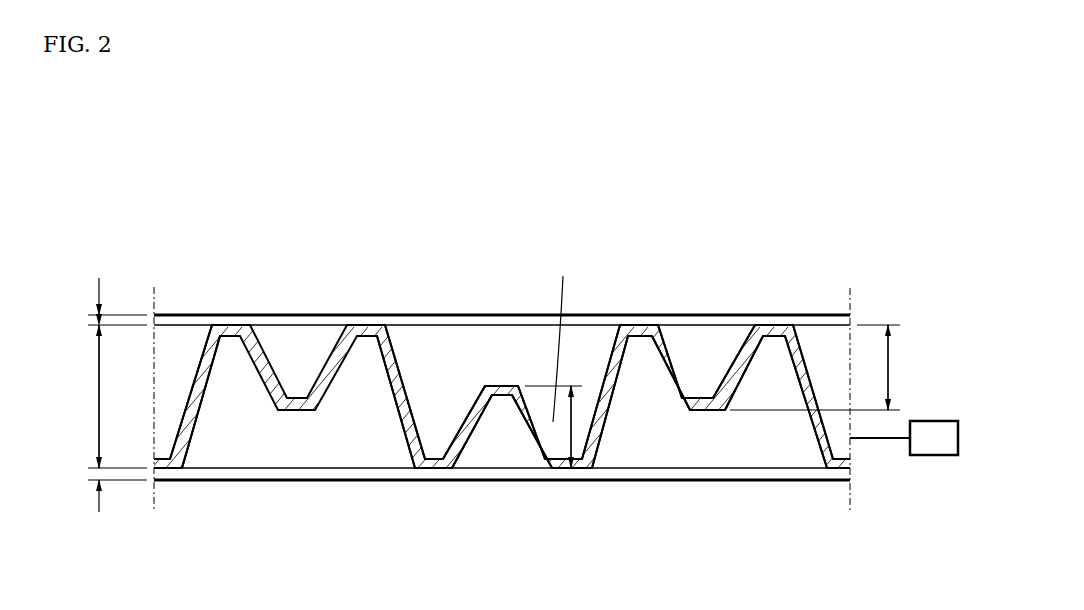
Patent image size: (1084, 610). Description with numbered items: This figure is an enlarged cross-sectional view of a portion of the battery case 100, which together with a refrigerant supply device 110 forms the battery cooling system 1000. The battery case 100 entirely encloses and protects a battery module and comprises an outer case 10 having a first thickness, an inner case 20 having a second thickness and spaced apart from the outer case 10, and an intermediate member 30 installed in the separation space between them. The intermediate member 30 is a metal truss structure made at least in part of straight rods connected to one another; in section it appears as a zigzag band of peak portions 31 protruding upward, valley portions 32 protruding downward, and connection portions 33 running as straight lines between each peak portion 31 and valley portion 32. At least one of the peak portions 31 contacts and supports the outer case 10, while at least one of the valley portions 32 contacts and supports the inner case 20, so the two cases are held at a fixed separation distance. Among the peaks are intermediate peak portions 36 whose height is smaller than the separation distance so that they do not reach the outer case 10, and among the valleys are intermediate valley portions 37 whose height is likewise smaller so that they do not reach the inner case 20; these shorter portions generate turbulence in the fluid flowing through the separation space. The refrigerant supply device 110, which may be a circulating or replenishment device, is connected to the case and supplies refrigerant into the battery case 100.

The battery cooling system 1000 is at (132, 147).
The battery case 100 is at (200, 227).
The outer case 10 is at (298, 313).
The inner case 20 is at (292, 482).
The intermediate member 30 is at (455, 231).
The peak portions 31 is at (370, 324).
The valley portions 32 is at (438, 457).
The connection portions 33 is at (404, 374).
The intermediate peak portions 36 is at (501, 385).
The intermediate valley portions 37 is at (711, 397).
The refrigerant supply device 110 is at (934, 455).